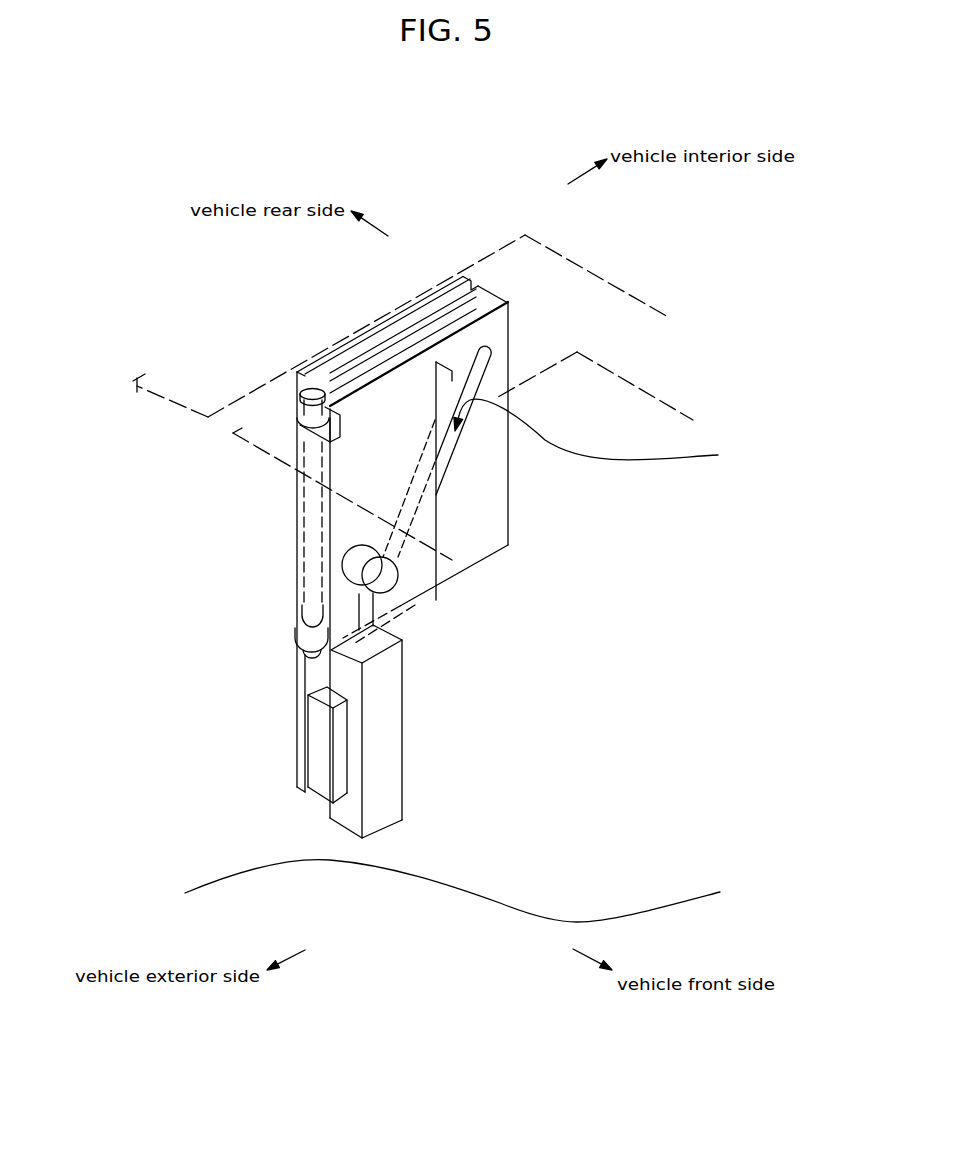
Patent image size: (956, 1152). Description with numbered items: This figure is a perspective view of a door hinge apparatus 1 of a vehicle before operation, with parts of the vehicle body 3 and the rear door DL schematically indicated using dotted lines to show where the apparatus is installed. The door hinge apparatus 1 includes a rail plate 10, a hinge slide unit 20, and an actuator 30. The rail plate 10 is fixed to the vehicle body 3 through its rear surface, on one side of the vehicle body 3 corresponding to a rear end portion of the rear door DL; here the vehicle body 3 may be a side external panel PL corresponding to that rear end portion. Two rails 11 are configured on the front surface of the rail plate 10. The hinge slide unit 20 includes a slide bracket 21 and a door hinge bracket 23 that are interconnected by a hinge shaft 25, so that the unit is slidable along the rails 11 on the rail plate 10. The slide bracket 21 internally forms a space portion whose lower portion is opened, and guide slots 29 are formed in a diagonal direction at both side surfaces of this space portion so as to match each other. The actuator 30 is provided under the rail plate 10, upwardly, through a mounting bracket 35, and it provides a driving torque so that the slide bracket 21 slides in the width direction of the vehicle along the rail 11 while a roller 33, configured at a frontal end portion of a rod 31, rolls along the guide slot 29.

The door hinge apparatus 1 is at (404, 397).
The vehicle body 3 is at (152, 403).
The rear door DL is at (262, 447).
The side external panel PL is at (483, 258).
The rail plate 10 is at (387, 548).
The rails 11 is at (375, 343).
The hinge slide unit 20 is at (500, 420).
The slide bracket 21 is at (486, 297).
The door hinge bracket 23 is at (420, 358).
The hinge shaft 25 is at (300, 545).
The guide slot 29 is at (598, 432).
The actuator 30 is at (387, 808).
The rod 31 is at (308, 636).
The roller 33 is at (340, 590).
The mounting bracket 35 is at (323, 790).